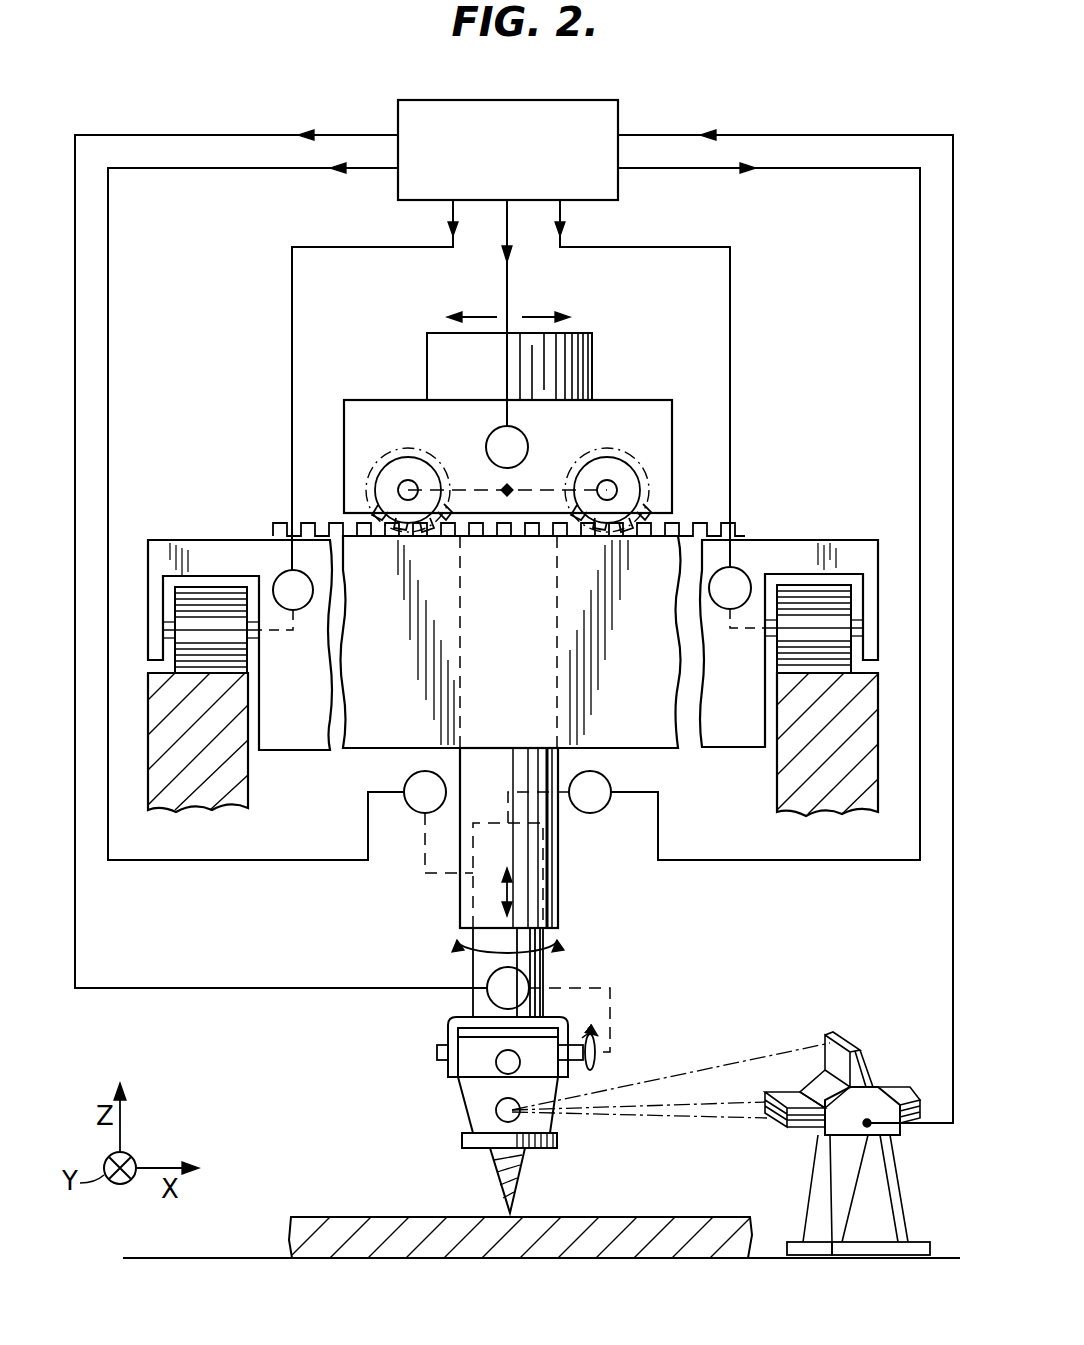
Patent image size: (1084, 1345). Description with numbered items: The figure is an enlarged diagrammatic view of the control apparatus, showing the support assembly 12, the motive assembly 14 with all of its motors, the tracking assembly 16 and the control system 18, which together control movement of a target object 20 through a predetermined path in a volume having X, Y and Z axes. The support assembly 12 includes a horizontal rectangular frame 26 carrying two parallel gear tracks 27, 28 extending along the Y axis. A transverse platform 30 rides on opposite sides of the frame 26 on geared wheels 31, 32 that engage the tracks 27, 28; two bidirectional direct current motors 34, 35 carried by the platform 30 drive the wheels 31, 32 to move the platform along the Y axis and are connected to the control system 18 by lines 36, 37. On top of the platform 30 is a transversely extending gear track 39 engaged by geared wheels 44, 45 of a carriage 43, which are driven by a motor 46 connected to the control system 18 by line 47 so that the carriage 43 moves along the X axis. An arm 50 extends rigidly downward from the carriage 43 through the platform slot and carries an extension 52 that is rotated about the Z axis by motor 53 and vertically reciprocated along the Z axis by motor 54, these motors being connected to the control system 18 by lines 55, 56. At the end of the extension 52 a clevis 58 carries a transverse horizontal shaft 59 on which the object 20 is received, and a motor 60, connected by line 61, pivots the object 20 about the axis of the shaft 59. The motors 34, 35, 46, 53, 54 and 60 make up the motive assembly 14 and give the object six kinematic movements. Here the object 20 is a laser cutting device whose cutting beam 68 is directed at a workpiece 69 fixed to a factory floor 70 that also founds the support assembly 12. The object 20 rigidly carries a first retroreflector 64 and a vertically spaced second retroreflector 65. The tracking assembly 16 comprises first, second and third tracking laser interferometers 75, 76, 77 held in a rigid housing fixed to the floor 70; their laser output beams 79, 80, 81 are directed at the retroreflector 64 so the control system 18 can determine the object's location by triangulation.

The support assembly 12 is at (832, 524).
The motive assembly 14 is at (758, 460).
The tracking assembly 16 is at (853, 1111).
The control system 18 is at (622, 108).
The target object 20 is at (471, 1106).
The horizontal rectangular frame 26 is at (878, 700).
The gear track 27 is at (780, 670).
The gear track 28 is at (243, 668).
The transverse platform 30 is at (195, 536).
The geared wheel 31 is at (845, 598).
The geared wheel 32 is at (185, 608).
The bidirectional direct current motor 34 is at (745, 575).
The bidirectional direct current motor 35 is at (278, 580).
The line 36 is at (730, 335).
The line 37 is at (292, 368).
The gear track 39 is at (315, 522).
The carriage 43 is at (420, 396).
The geared wheel 44 is at (625, 470).
The geared wheel 45 is at (388, 478).
The bidirectional direct current motor 46 is at (527, 447).
The line 47 is at (510, 287).
The arm 50 is at (550, 610).
The extension 52 is at (540, 972).
The bidirectional direct current motor 53 is at (406, 780).
The bidirectional direct current motor 54 is at (612, 786).
The line 55 is at (850, 862).
The line 56 is at (238, 862).
The clevis 58 is at (450, 1022).
The shaft 59 is at (437, 1052).
The bidirectional direct current motor 60 is at (487, 985).
The line 61 is at (274, 988).
The first retroreflector 64 is at (495, 1113).
The second retroreflector 65 is at (520, 1072).
The cutting beam 68 is at (495, 1178).
The workpiece 69 is at (305, 1215).
The factory floor 70 is at (233, 1256).
The first tracking laser interferometer 75 is at (905, 1087).
The second tracking laser interferometer 76 is at (825, 1033).
The third tracking laser interferometer 77 is at (790, 1130).
The laser output beam 79 is at (765, 1055).
The laser output beam 80 is at (738, 1100).
The laser output beam 81 is at (660, 1120).